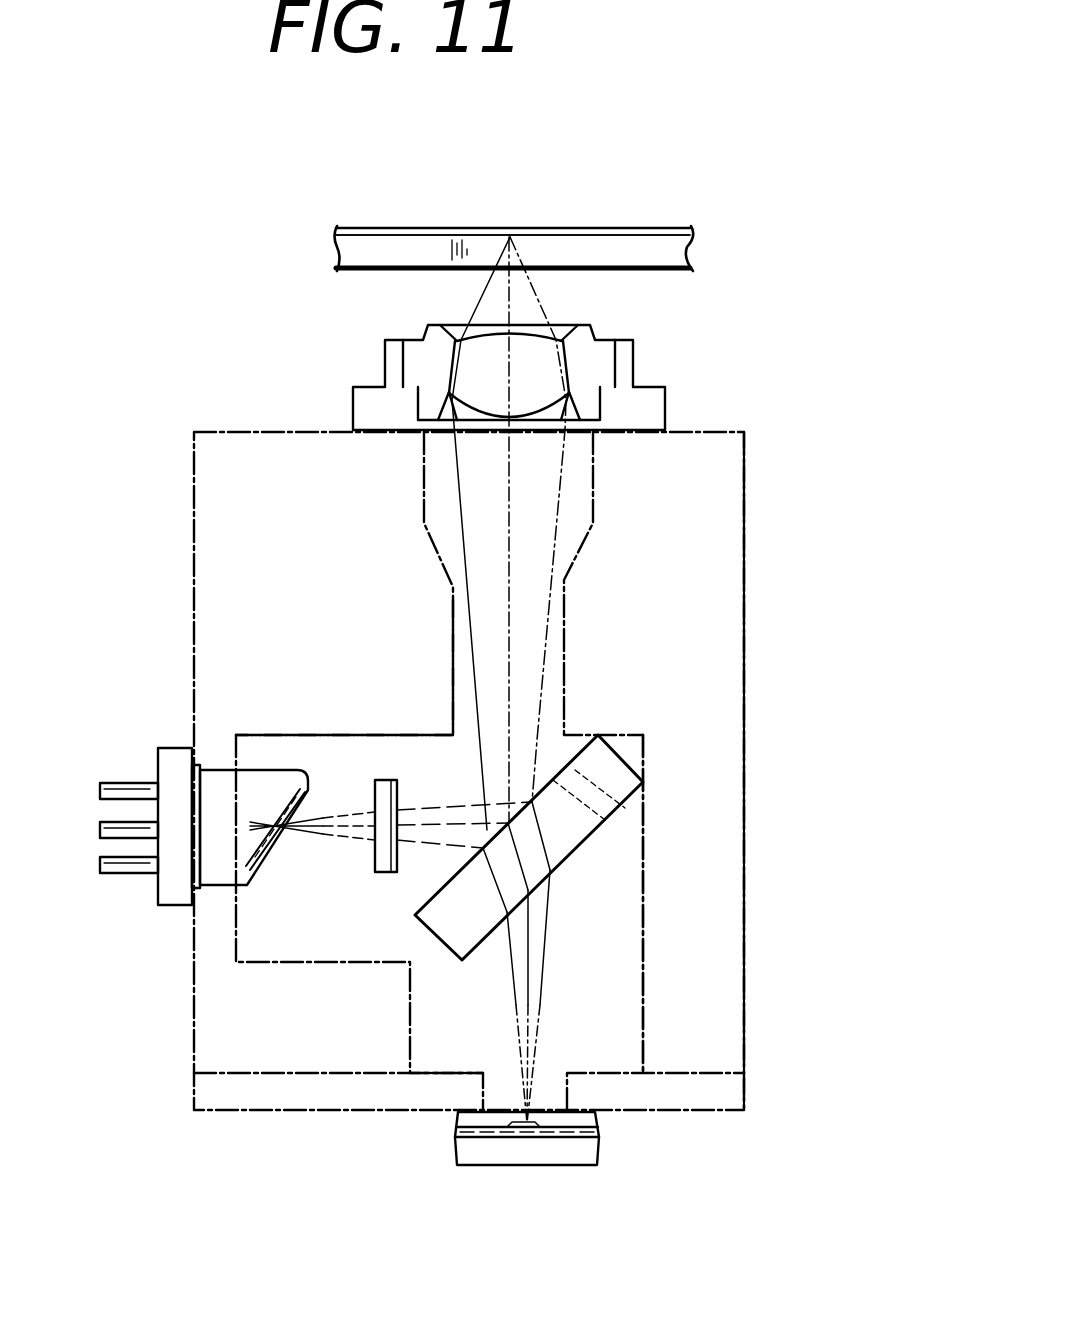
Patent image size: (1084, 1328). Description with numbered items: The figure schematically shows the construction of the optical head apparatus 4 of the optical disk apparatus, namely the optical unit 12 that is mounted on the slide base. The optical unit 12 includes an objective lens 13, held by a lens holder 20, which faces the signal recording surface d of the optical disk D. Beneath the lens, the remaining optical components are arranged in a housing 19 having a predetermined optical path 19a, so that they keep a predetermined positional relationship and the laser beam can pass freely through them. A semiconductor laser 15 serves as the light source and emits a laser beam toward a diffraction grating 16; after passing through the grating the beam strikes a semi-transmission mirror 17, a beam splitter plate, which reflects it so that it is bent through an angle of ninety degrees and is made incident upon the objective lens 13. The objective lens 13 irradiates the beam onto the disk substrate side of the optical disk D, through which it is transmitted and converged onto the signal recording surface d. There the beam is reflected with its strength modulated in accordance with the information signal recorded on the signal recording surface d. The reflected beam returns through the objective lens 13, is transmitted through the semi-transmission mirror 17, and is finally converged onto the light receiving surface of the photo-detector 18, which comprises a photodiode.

The optical head 4 is at (499, 704).
The optical unit 12 is at (188, 546).
The objective lens 13 is at (432, 347).
The semiconductor laser 15 is at (222, 785).
The diffraction grating 16 is at (387, 786).
The semi-transmission mirror 17 is at (595, 763).
The photo-detector 18 is at (495, 1168).
The housing 19 is at (744, 625).
The optical path 19a is at (560, 628).
The lens holder 20 is at (640, 385).
The signal recording surface d is at (591, 232).
The optical disk D is at (643, 245).